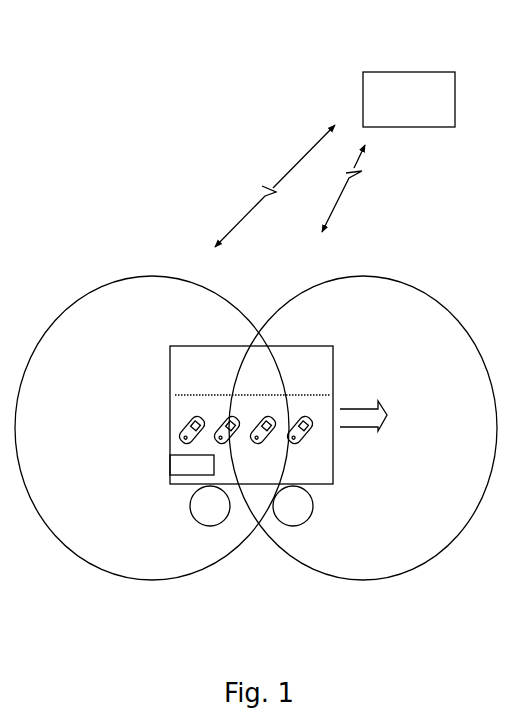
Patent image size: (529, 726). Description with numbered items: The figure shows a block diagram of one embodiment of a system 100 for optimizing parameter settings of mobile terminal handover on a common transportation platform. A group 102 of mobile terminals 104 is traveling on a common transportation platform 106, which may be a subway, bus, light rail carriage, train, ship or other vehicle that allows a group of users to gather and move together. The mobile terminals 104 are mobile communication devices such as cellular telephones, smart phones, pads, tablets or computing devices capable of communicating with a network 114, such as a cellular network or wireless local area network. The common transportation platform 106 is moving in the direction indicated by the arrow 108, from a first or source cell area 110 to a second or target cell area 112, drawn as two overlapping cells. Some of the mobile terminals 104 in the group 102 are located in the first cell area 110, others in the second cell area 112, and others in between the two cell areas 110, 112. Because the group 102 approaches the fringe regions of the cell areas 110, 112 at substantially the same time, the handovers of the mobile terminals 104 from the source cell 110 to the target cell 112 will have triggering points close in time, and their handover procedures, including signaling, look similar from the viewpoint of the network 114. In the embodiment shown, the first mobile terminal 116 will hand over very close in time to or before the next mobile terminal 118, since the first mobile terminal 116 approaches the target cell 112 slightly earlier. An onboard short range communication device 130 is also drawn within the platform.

The system 100 is at (147, 71).
The group 102 is at (243, 393).
The mobile terminals 104 is at (307, 412).
The common transportation platform 106 is at (380, 430).
The arrow 108 is at (190, 346).
The first cell area 110 is at (155, 581).
The second cell area 112 is at (363, 581).
The network 114 is at (410, 72).
The first mobile terminal 116 is at (298, 449).
The next mobile terminal 118 is at (268, 448).
The vehicle communication unit 130 is at (168, 462).